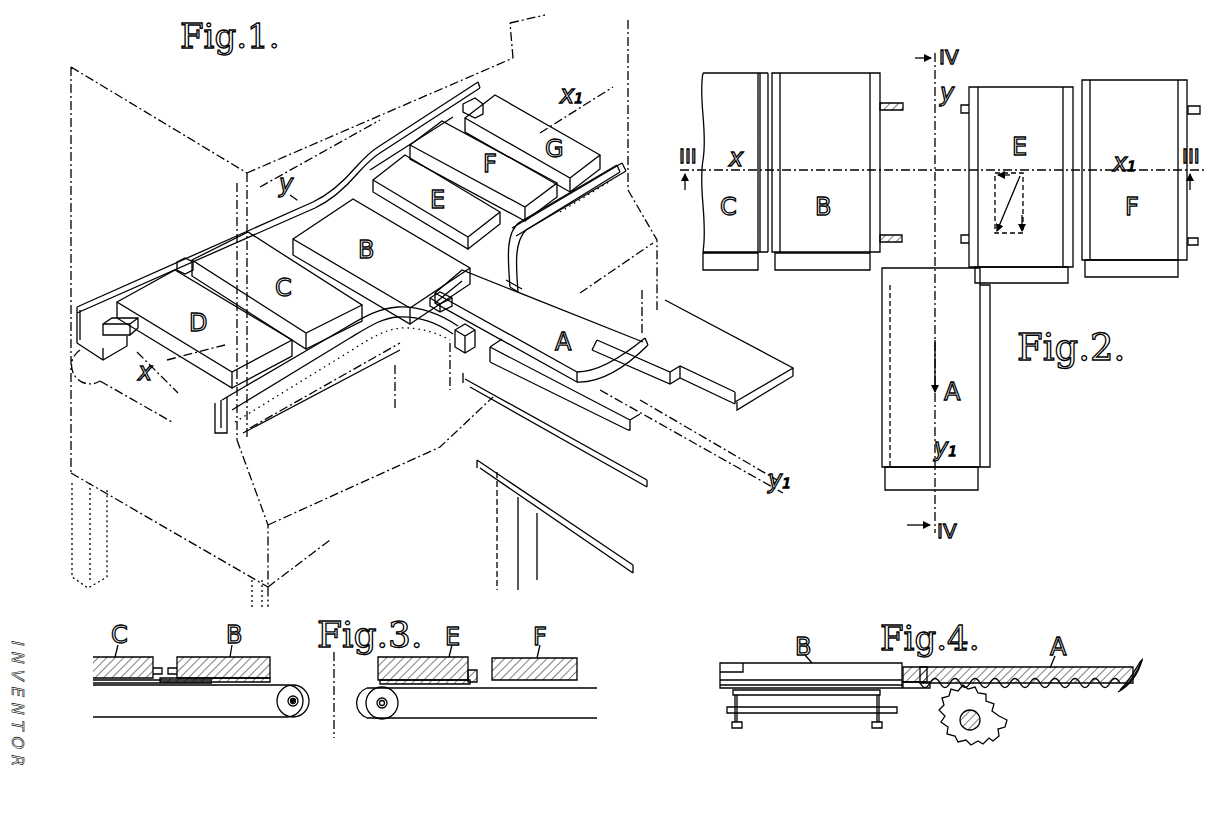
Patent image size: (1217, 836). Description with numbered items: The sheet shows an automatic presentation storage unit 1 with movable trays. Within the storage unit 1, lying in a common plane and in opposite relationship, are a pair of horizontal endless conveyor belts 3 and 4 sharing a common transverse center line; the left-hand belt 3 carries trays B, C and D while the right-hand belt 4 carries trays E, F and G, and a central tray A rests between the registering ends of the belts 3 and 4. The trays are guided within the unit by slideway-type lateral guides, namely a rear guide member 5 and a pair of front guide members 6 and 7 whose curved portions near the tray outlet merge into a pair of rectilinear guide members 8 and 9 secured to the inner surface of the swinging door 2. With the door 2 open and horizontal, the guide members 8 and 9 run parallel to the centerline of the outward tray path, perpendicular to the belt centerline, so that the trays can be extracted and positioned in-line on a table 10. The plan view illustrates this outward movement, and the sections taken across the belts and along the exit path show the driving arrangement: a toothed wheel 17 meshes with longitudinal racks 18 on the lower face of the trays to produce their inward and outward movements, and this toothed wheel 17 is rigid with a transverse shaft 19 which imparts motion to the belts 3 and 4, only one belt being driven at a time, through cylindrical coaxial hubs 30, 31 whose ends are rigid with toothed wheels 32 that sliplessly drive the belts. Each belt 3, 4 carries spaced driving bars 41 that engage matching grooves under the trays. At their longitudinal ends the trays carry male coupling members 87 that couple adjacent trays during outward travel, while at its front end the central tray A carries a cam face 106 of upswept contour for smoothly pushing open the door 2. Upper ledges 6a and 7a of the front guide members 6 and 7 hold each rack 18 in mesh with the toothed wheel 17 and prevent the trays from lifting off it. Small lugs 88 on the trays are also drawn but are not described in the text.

In FIG. 1, the storage unit 1 is at (73, 180).
In FIG. 1, the door 2 is at (593, 435).
In FIG. 1, the endless conveyor belt 3 is at (278, 412).
In FIG. 2, the endless conveyor belt 3 is at (888, 235).
In FIG. 3, the endless conveyor belt 3 is at (218, 717).
In FIG. 1, the endless conveyor belt 4 is at (603, 197).
In FIG. 2, the endless conveyor belt 4 is at (1190, 247).
In FIG. 3, the endless conveyor belt 4 is at (520, 718).
In FIG. 4, the endless conveyor belt 4 is at (742, 727).
In FIG. 1, the rear guide member 5 is at (182, 256).
In FIG. 1, the front guide member 6 is at (327, 362).
In FIG. 1, the upper ledge 6a is at (455, 331).
In FIG. 1, the front guide member 7 is at (562, 213).
In FIG. 1, the upper ledge 7a is at (530, 287).
In FIG. 1, the rectilinear guide member 8 is at (573, 405).
In FIG. 1, the rectilinear guide member 9 is at (690, 365).
In FIG. 1, the table 10 is at (513, 468).
In FIG. 4, the toothed wheel 17 is at (1008, 735).
In FIG. 4, the longitudinal rack 18 is at (1082, 692).
In FIG. 4, the transverse shaft 19 is at (940, 735).
In FIG. 3, the cylindrical coaxial hub 30 is at (295, 696).
In FIG. 3, the cylindrical coaxial hub 31 is at (372, 690).
In FIG. 4, the cylindrical coaxial hub 31 is at (812, 713).
In FIG. 3, the toothed wheel 32 is at (293, 706).
In FIG. 4, the toothed wheel 32 is at (733, 726).
In FIG. 3, the driving bar 41 is at (178, 681).
In FIG. 1, the male coupling member 87 is at (433, 300).
In FIG. 2, the male coupling member 87 is at (829, 266).
In FIG. 4, the male coupling member 87 is at (915, 688).
In FIG. 1, the pallet locating dog 88 is at (132, 322).
In FIG. 4, the pallet locating dog 88 is at (910, 667).
In FIG. 1, the cam face 106 is at (645, 344).
In FIG. 2, the cam face 106 is at (980, 482).
In FIG. 4, the cam face 106 is at (1128, 662).